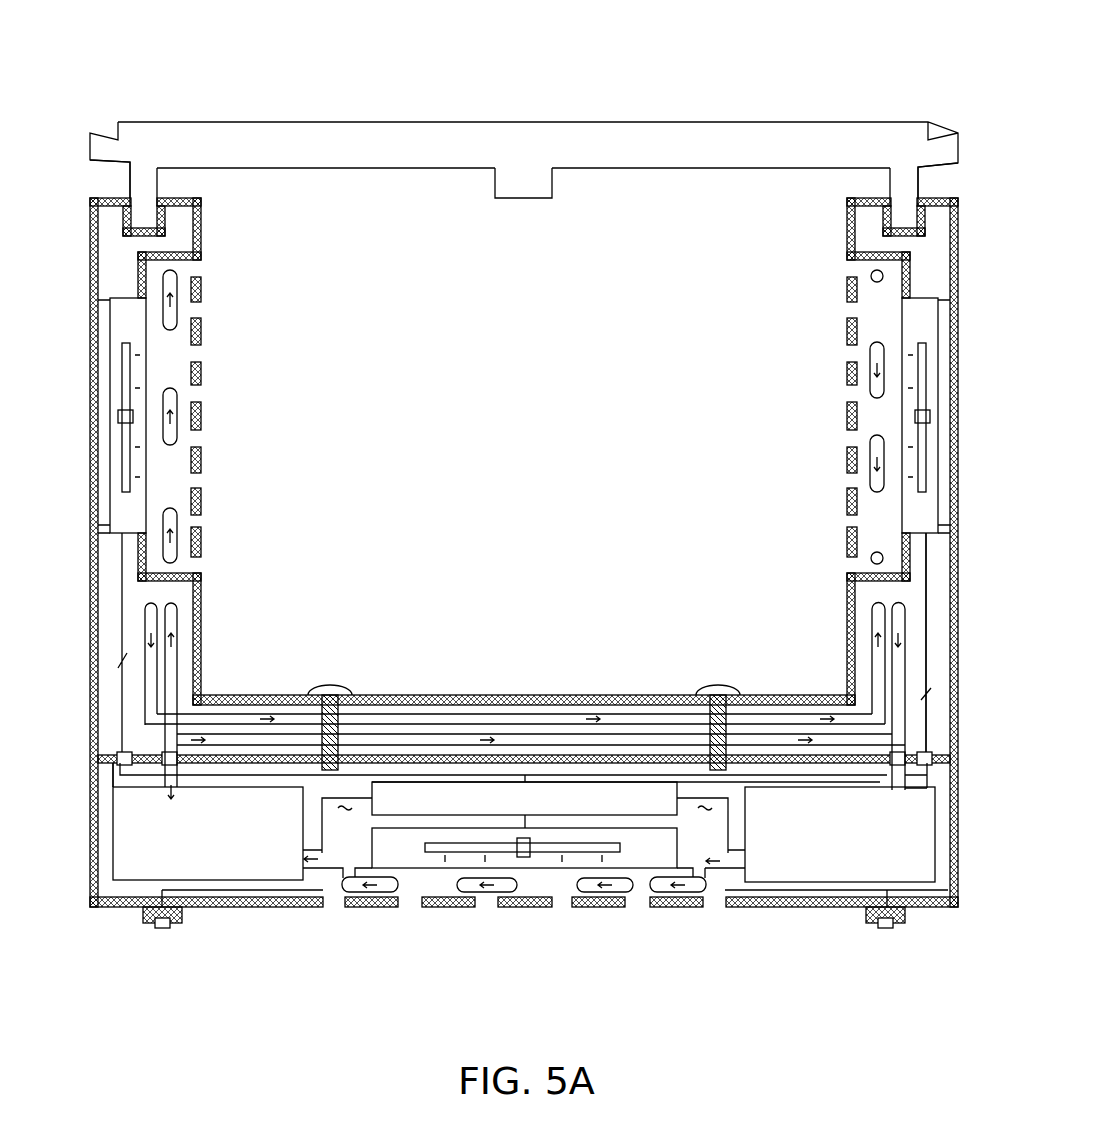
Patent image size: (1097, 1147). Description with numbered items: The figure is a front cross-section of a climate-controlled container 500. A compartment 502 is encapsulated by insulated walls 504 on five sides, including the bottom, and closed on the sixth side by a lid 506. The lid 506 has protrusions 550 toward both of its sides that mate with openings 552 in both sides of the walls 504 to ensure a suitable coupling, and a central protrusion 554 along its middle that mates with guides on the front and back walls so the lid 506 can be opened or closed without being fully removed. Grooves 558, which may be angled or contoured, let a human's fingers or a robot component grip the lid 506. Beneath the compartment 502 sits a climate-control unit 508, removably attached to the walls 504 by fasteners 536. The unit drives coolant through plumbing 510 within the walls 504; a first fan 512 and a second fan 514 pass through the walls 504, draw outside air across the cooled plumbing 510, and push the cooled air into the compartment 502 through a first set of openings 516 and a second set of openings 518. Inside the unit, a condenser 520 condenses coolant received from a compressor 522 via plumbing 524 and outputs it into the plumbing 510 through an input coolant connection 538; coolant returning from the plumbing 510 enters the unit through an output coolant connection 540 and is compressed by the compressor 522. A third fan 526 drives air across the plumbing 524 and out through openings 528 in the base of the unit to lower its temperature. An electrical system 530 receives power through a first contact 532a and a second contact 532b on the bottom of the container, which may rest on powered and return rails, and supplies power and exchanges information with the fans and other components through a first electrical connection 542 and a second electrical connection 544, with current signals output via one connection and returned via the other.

The climate-controlled container 500 is at (126, 88).
The compartment 502 is at (487, 290).
The walls 504 is at (93, 470).
The lid 506 is at (663, 170).
The climate-control unit 508 is at (90, 863).
The plumbing 510 is at (178, 398).
The first fan 512 is at (133, 488).
The second fan 514 is at (917, 468).
The first set of openings 516 is at (202, 356).
The second set of openings 518 is at (848, 352).
The condenser 520 is at (258, 865).
The compressor 522 is at (777, 865).
The plumbing 524 is at (622, 853).
The third fan 526 is at (660, 893).
The openings 528 is at (412, 900).
The electrical system 530 is at (413, 808).
The first contact 532a is at (158, 930).
The second contact 532b is at (883, 930).
The fasteners 536 is at (327, 686).
The input coolant connection 538 is at (167, 753).
The output coolant connection 540 is at (897, 773).
The first electrical connection 542 is at (113, 787).
The second electrical connection 544 is at (923, 780).
The protrusions 550 is at (130, 191).
The openings 552 is at (162, 212).
The central protrusion 554 is at (523, 199).
The grooves 558 is at (112, 129).